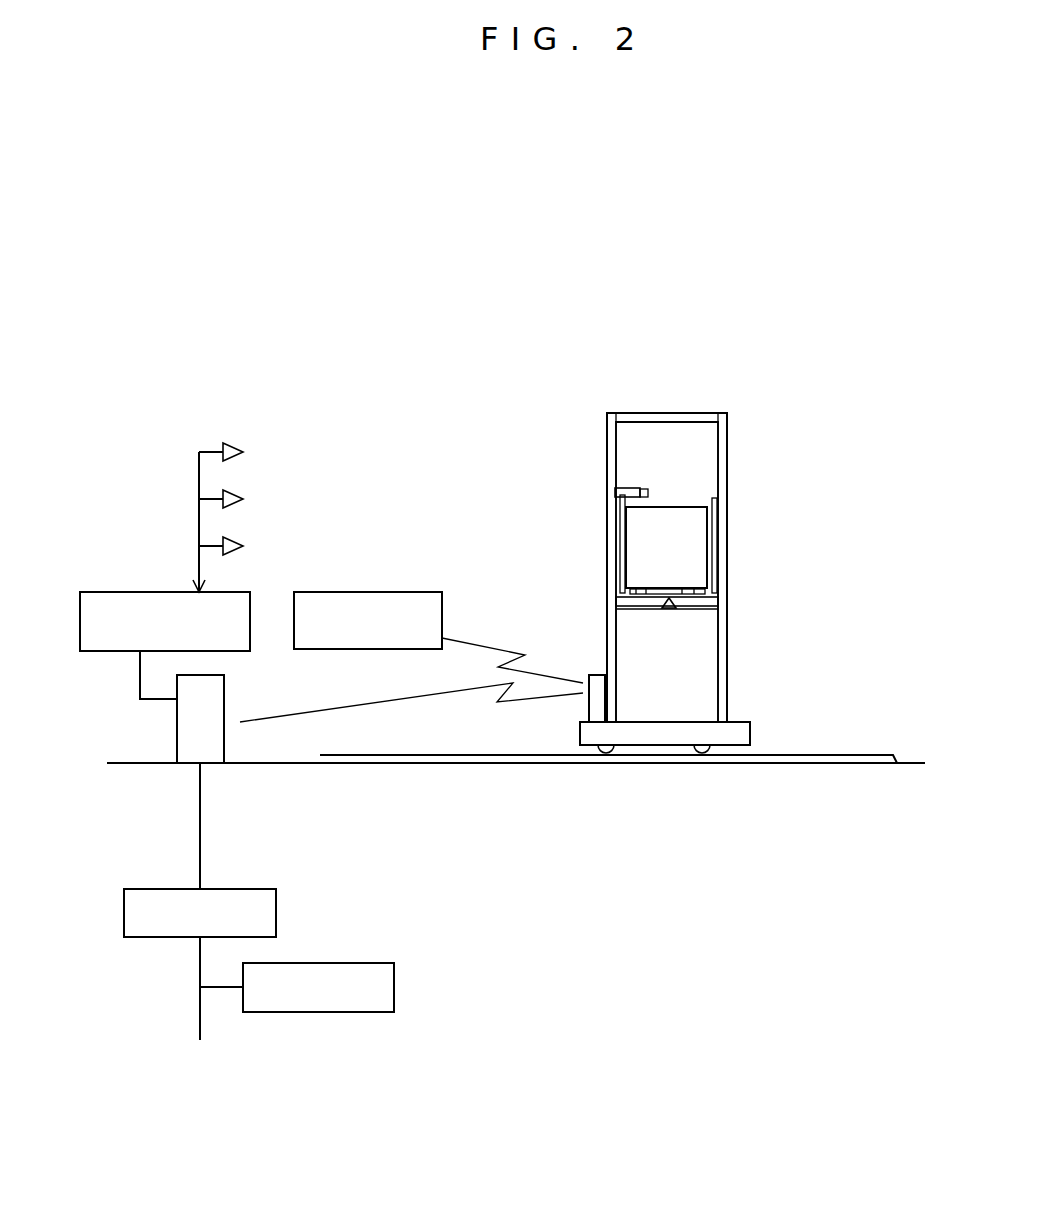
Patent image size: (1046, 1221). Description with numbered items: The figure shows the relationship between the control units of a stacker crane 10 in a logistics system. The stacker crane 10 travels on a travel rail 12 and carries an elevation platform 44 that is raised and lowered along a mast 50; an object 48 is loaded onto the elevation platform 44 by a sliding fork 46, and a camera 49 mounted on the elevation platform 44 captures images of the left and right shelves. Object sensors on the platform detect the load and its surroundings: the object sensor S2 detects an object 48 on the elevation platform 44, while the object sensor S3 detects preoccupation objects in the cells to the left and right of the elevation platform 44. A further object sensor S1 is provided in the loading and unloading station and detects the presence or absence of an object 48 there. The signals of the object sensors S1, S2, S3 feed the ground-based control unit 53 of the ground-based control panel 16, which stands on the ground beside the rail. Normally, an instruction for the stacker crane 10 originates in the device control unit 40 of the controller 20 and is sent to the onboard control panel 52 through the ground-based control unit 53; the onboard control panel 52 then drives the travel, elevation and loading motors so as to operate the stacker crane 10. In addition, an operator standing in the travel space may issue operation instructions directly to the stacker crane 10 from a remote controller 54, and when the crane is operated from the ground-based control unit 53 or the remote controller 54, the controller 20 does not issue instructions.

The stacker crane 10 is at (752, 709).
The travel rail 12 is at (825, 757).
The ground-based control panel 16 is at (218, 697).
The controller 20 is at (278, 909).
The device control unit 40 is at (352, 1013).
The elevation platform 44 is at (648, 609).
The sliding fork 46 is at (690, 588).
The object 48 is at (703, 533).
The camera 49 is at (645, 488).
The mast 50 is at (605, 612).
The onboard control panel 52 is at (595, 703).
The ground-based control unit 53 is at (132, 592).
The remote controller 54 is at (398, 592).
The object sensor S1 is at (237, 452).
The object sensor S2 is at (441, 563).
The object sensor S3 is at (237, 546).